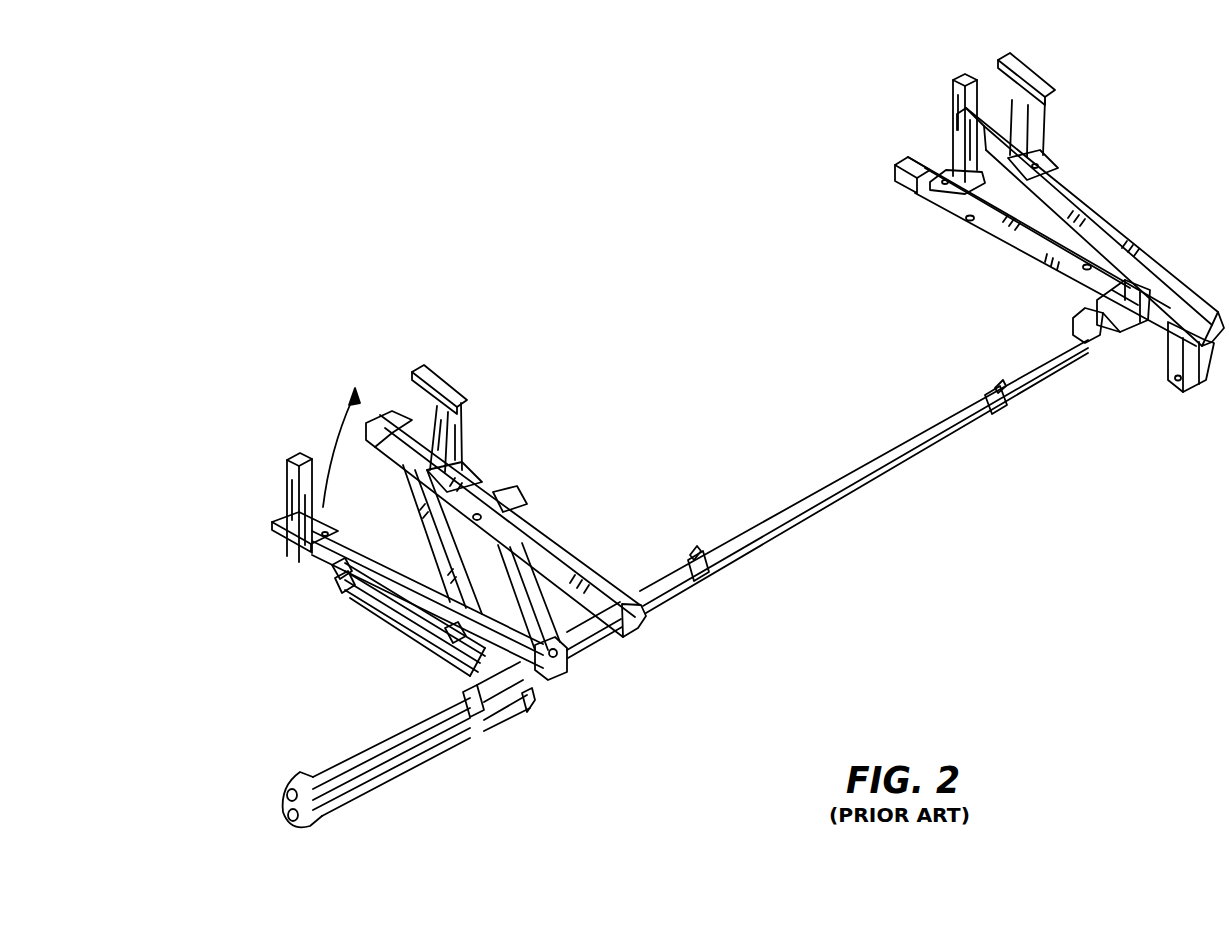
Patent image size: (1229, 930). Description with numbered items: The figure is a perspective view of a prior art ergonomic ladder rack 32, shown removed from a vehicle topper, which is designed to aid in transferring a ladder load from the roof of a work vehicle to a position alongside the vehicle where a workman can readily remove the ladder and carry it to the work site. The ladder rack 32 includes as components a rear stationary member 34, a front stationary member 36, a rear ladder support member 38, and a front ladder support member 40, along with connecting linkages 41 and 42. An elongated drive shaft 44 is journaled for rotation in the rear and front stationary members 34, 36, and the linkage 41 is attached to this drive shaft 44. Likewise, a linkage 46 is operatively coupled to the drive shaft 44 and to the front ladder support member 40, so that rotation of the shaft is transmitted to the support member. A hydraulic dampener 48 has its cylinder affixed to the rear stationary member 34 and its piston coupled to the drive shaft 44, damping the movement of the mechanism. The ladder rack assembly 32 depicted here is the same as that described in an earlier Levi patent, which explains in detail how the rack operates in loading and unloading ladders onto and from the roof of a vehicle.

The ladder rack 32 is at (980, 518).
The rear stationary member 34 is at (272, 533).
The front stationary member 36 is at (893, 176).
The rear ladder support member 38 is at (540, 548).
The front ladder support member 40 is at (1084, 206).
The connecting linkage 41 is at (523, 500).
The connecting linkage 42 is at (427, 533).
The drive shaft 44 is at (825, 485).
The linkage 46 is at (1078, 321).
The hydraulic dampener 48 is at (380, 623).